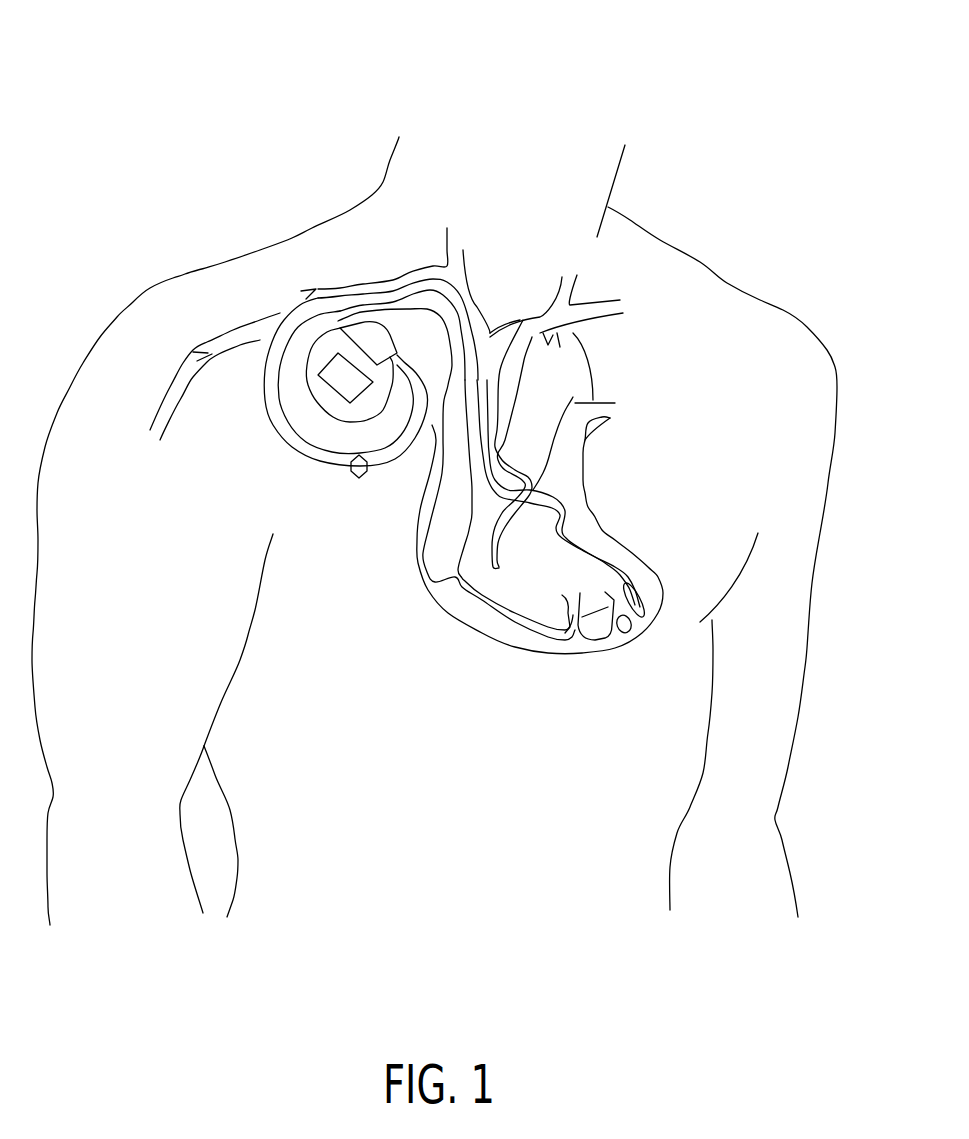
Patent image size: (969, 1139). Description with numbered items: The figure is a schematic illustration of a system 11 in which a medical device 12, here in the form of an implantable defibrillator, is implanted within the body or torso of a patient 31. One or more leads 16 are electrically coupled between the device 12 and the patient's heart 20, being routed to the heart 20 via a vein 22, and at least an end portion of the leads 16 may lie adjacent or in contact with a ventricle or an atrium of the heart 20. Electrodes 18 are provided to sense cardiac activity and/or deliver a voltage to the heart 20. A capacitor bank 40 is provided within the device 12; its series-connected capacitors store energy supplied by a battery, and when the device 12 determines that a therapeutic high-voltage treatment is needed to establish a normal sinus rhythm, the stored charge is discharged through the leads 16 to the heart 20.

The system 11 is at (540, 106).
The medical device 12 is at (335, 407).
The leads 16 is at (358, 478).
The electrodes 18 is at (626, 582).
The heart 20 is at (585, 656).
The vein 22 is at (262, 320).
The patient 31 is at (791, 312).
The capacitor bank 40 is at (307, 427).